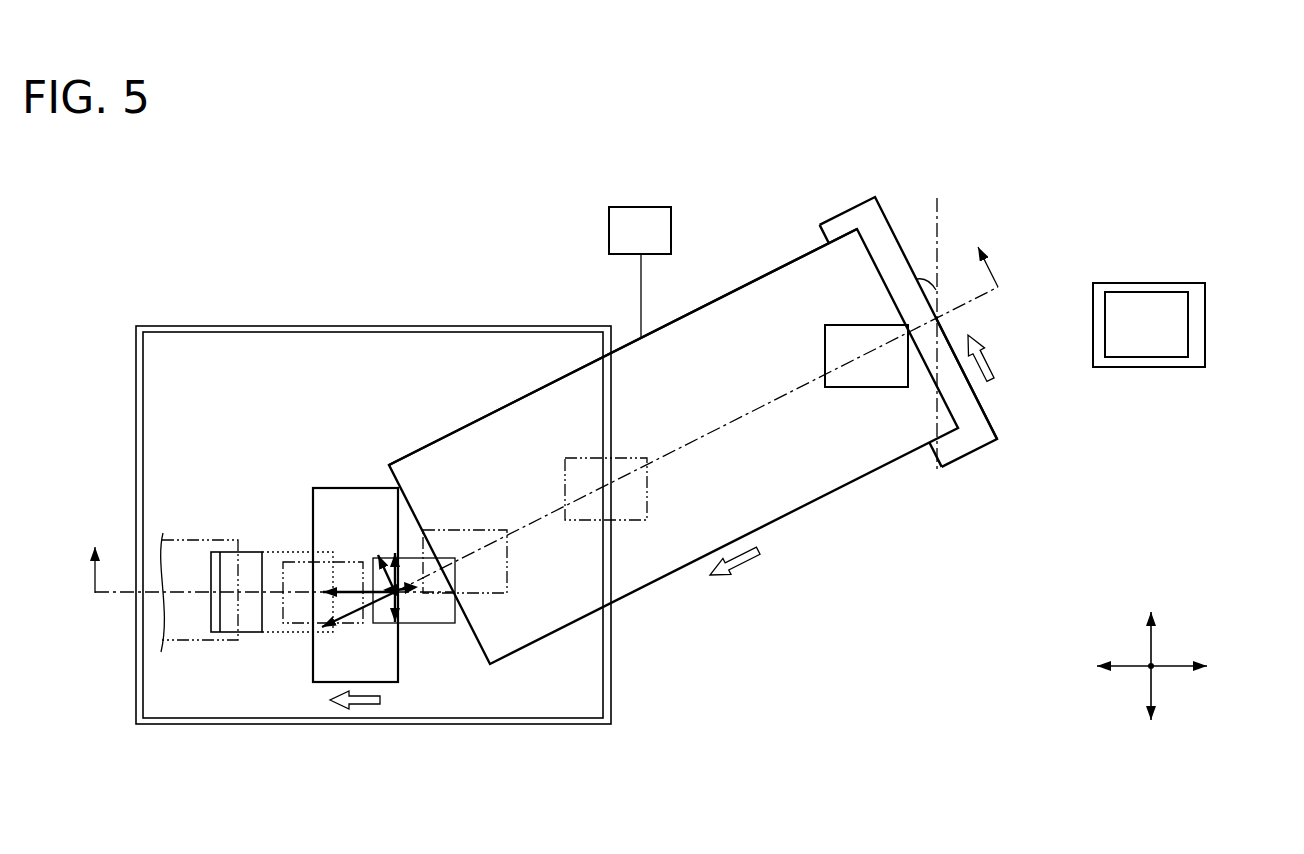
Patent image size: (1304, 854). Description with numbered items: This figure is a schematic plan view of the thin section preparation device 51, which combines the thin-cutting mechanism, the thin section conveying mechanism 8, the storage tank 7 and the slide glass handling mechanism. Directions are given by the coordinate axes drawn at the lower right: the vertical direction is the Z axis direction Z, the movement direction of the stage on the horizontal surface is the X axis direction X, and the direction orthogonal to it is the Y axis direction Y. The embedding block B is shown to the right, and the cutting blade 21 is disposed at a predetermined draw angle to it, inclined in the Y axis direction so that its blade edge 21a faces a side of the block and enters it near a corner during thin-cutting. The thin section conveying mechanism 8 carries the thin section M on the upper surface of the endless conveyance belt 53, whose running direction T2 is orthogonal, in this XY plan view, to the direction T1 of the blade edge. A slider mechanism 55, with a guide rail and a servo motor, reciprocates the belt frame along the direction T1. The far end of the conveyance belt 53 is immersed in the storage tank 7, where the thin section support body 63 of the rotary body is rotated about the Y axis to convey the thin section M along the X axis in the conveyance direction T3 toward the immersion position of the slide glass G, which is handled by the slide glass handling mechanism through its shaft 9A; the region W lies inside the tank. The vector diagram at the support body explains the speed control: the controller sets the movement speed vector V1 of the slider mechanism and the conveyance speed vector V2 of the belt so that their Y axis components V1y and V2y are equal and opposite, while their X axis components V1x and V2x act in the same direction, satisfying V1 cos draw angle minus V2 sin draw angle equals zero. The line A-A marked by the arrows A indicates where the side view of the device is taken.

The storage tank 7 is at (370, 325).
The workpiece region W is at (489, 360).
The slider mechanism 55 is at (638, 215).
The thin section preparation device 51 is at (740, 384).
The thin section conveying mechanism 8 is at (839, 494).
The conveyance belt 53 is at (782, 268).
The cutting blade 21 is at (876, 192).
The blade edge 21a is at (988, 413).
The thin section M is at (867, 378).
The direction of the blade edge T1 is at (989, 357).
The running direction T2 is at (736, 573).
The conveyance direction T3 is at (365, 709).
The line A- A is at (543, 406).
The shaft 9A is at (195, 540).
The slide glass G is at (230, 622).
The thin section support body 63 is at (351, 482).
The movement speed vector V1 is at (373, 566).
The X axis direction component of the movement speed vector V1x is at (402, 598).
The Y axis direction component of the movement speed vector V1y is at (400, 572).
The conveyance speed vector V2 is at (348, 622).
The X axis direction component of the conveyance speed vector V2x is at (348, 587).
The Y axis direction component of the conveyance speed vector V2y is at (392, 603).
The embedding block B is at (1145, 302).
The frame K is at (1196, 323).
The X axis direction X is at (1170, 666).
The Y axis direction Y is at (1151, 643).
The Z axis direction Z is at (1151, 666).